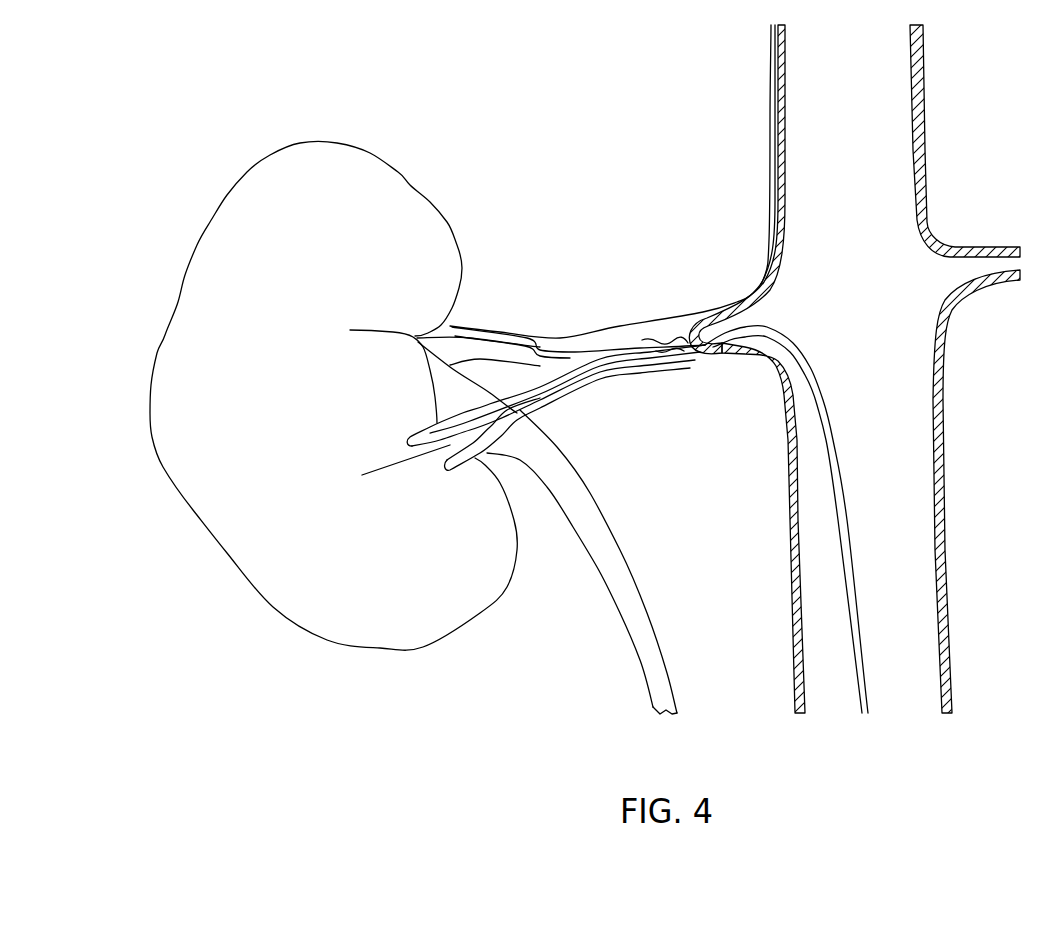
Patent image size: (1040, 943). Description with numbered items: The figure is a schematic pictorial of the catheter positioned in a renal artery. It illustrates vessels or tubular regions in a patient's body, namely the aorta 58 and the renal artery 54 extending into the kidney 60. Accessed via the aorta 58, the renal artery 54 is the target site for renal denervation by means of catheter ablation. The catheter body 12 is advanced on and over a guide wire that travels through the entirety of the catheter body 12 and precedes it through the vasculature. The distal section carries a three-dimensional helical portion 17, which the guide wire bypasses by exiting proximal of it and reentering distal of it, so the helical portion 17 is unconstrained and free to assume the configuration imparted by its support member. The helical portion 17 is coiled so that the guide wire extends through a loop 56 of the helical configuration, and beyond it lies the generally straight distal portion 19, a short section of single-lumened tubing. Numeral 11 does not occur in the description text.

The kidney 60 is at (408, 184).
The renal artery 11 is at (567, 345).
The generally straight distal portion 19 is at (582, 346).
The loop 56 is at (608, 342).
The helical portion 17 is at (660, 337).
The renal artery 54 is at (710, 312).
The catheter body 12 is at (826, 390).
The aorta 58 is at (786, 502).